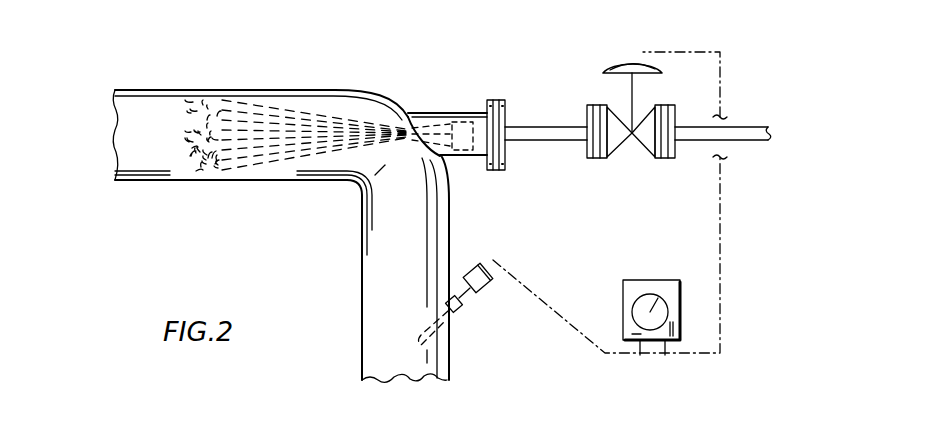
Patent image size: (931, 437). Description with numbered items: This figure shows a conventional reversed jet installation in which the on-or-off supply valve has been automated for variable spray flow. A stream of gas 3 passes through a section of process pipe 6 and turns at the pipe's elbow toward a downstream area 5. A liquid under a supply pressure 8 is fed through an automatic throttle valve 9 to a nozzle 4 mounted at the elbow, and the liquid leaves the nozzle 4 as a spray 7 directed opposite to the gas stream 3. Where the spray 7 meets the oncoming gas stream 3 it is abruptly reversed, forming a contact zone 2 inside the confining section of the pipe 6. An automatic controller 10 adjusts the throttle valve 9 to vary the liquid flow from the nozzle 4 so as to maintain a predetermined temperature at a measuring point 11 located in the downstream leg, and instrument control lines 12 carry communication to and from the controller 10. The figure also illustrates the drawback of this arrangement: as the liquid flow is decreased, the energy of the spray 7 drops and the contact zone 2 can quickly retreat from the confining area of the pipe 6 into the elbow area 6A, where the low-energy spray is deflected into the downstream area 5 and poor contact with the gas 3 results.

The contact zone 2 is at (207, 183).
The gas stream 3 is at (104, 135).
The nozzle 4 is at (463, 112).
The downstream area 5 is at (407, 382).
The process pipe 6 is at (145, 88).
The elbow area 6A is at (350, 192).
The spray jet 7 is at (302, 88).
The liquid supply pressure 8 is at (800, 133).
The automatic throttle valve 9 is at (603, 67).
The automatic controller 10 is at (622, 302).
The measuring point 11 is at (460, 304).
The instrument control lines 12 is at (677, 356).